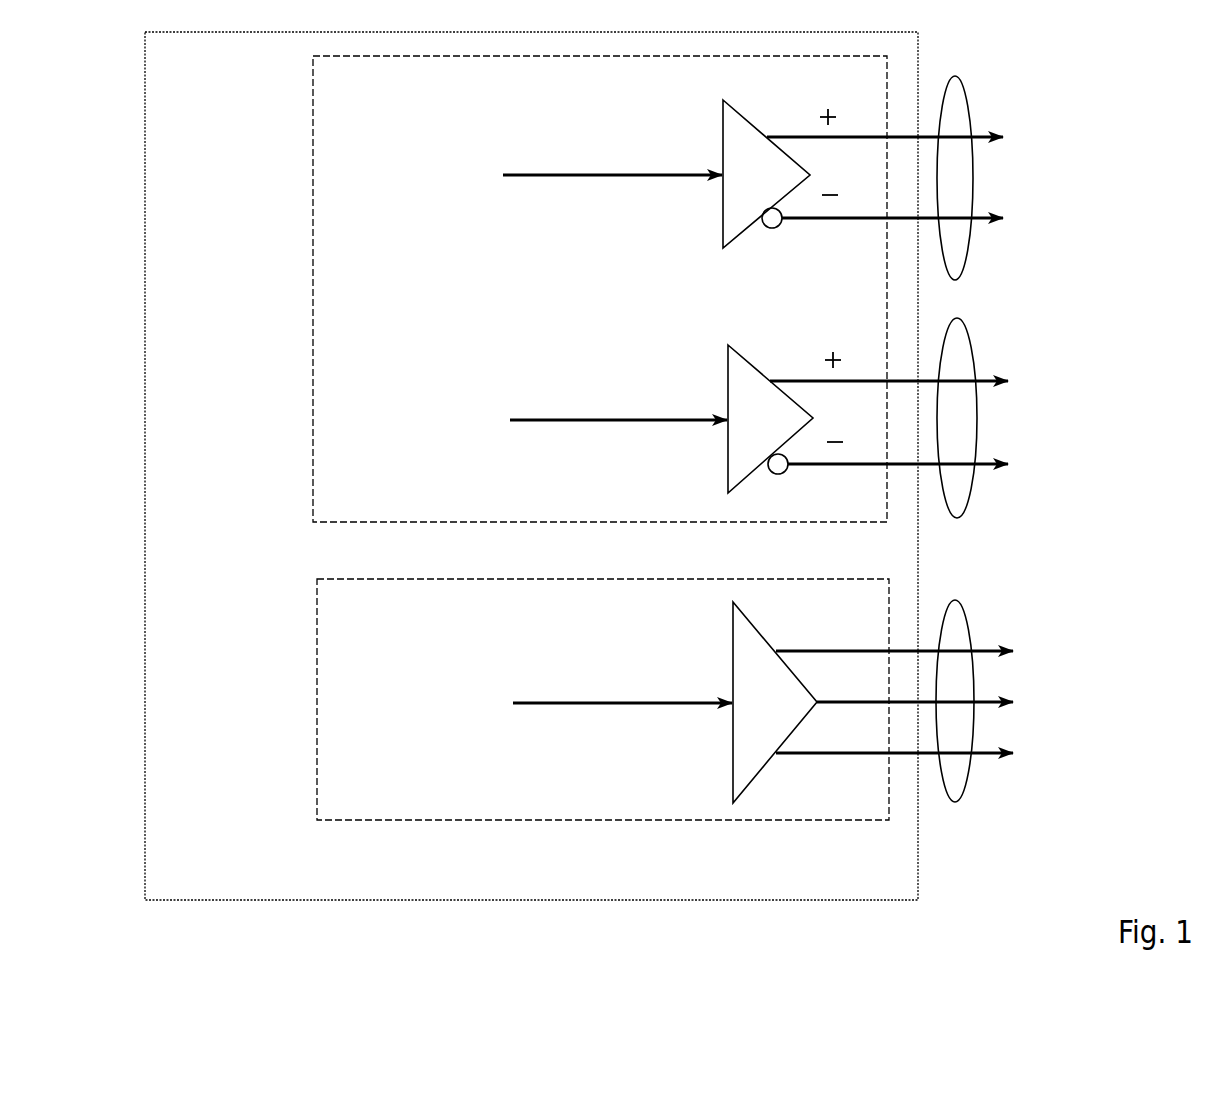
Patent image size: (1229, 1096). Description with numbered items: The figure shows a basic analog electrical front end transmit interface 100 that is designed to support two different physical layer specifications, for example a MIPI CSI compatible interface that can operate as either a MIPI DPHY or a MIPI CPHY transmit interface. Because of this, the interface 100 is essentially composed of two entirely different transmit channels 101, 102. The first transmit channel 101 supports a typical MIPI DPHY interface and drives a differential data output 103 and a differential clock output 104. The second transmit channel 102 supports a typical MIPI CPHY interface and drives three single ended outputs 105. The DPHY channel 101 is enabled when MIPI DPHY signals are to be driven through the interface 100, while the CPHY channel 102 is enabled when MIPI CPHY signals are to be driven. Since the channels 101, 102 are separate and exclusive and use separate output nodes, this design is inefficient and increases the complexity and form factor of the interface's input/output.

The analog electrical front end transmit interface 100 is at (872, 871).
The first transmit channel 101 is at (313, 353).
The second transmit channel 102 is at (315, 697).
The differential data output 103 is at (967, 250).
The differential clock output 104 is at (968, 505).
The single ended outputs 105 is at (968, 790).